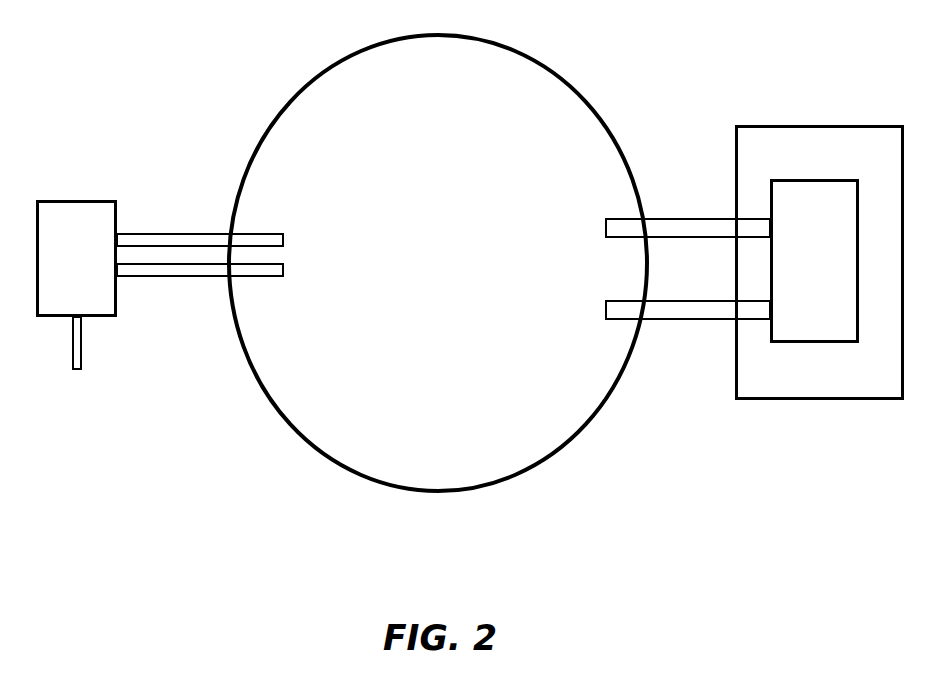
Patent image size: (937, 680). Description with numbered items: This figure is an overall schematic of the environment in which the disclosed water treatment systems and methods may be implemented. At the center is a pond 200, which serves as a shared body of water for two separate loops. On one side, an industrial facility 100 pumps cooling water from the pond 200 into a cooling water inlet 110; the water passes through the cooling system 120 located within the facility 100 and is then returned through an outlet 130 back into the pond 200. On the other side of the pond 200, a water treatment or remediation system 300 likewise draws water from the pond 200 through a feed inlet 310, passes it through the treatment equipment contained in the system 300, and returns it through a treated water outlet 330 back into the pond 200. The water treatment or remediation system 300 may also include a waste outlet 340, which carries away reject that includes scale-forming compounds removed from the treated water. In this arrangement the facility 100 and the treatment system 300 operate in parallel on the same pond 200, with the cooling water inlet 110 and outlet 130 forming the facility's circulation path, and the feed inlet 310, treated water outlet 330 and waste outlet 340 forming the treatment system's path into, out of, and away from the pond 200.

The industrial facility 100 is at (841, 169).
The cooling water inlet 110 is at (736, 215).
The cooling system 120 is at (841, 260).
The outlet 130 is at (735, 323).
The pond 200 is at (460, 119).
The water treatment or remediation system 300 is at (104, 262).
The feed inlet 310 is at (122, 230).
The treated water outlet 330 is at (118, 280).
The waste outlet 340 is at (70, 318).